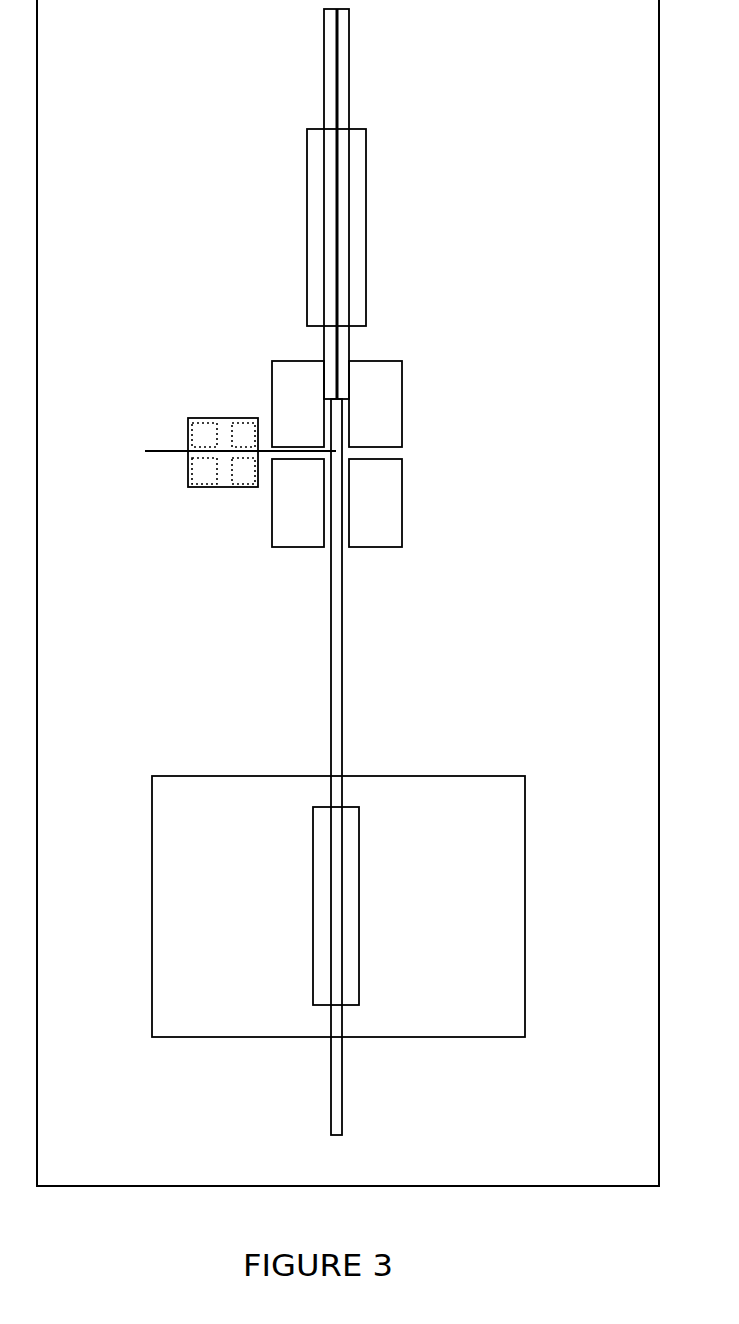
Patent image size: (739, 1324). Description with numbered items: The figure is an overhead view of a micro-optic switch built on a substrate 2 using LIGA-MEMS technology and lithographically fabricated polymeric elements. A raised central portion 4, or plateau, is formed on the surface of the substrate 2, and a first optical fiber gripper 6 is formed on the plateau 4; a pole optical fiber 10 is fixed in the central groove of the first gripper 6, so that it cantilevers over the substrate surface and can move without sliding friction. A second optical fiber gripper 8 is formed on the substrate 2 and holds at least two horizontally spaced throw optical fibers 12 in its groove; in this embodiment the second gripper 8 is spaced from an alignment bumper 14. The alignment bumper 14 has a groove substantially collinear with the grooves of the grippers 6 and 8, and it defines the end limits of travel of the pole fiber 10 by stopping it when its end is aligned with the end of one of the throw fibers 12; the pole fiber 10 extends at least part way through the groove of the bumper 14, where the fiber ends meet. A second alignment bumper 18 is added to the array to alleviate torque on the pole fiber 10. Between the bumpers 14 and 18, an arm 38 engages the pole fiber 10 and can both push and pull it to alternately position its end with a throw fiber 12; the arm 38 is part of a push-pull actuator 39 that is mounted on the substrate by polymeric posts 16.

The substrate 2 is at (512, 612).
The raised central portion 4 is at (453, 953).
The first optical fiber gripper 6 is at (320, 826).
The second optical fiber gripper 8 is at (313, 282).
The pole optical fiber 10 is at (333, 1082).
The throw optical fibers 12 is at (360, 80).
The alignment bumper 14 is at (382, 398).
The polymeric posts 16 is at (208, 433).
The second alignment bumper 18 is at (380, 502).
The arm 38 is at (165, 457).
The push-pull actuator 39 is at (233, 487).